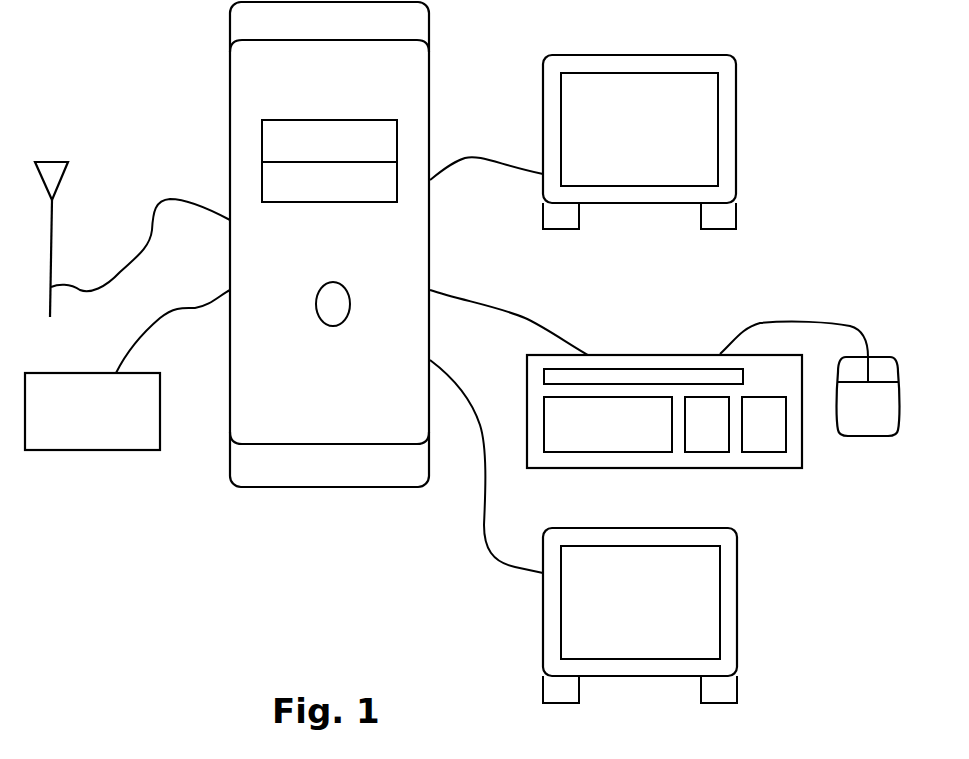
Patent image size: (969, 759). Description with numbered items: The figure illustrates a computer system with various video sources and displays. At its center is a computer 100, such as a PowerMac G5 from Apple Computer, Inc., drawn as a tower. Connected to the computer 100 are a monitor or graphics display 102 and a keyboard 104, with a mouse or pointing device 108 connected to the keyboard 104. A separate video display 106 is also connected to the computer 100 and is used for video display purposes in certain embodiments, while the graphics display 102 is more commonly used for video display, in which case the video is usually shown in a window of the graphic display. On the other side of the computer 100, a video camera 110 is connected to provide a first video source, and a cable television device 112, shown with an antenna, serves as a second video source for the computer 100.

The computer 100 is at (346, 487).
The monitor or graphics display 102 is at (737, 133).
The keyboard 104 is at (651, 355).
The video display 106 is at (738, 611).
The mouse or pointing device 108 is at (862, 436).
The video camera 110 is at (106, 450).
The cable television device 112 is at (53, 208).